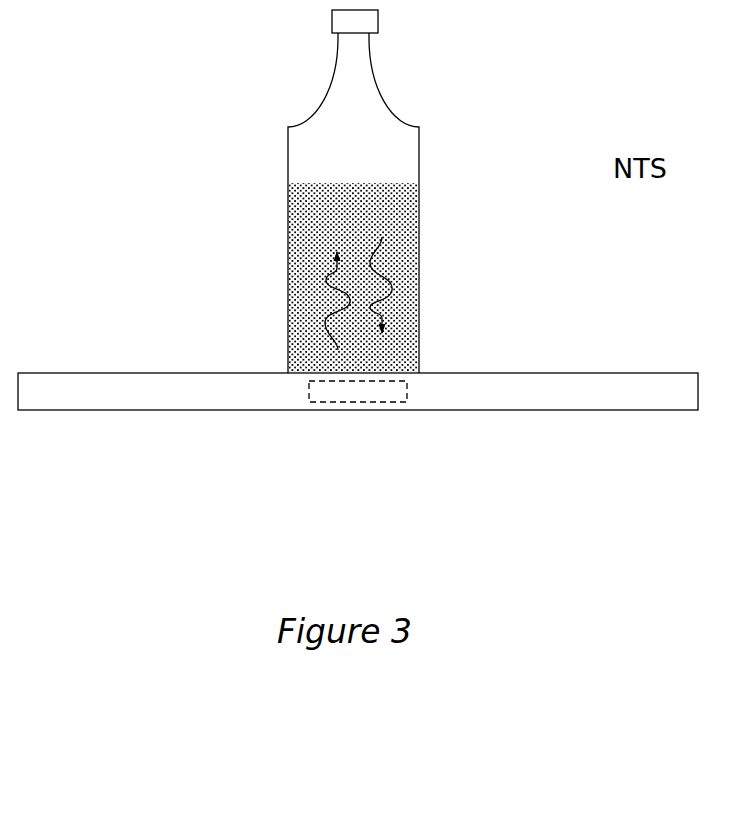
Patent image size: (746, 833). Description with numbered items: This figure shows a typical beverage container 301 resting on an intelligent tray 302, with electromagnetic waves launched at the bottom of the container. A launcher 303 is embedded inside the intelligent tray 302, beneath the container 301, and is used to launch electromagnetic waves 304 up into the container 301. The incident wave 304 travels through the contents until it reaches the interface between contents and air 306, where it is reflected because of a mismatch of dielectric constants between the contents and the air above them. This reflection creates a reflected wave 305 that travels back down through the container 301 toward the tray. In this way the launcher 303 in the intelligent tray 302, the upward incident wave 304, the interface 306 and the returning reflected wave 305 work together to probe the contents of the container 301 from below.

The container 301 is at (335, 191).
The intelligent tray 302 is at (358, 408).
The launcher 303 is at (361, 386).
The electromagnetic waves 304 is at (316, 289).
The reflected wave 305 is at (402, 290).
The interface between contents and air 306 is at (413, 187).